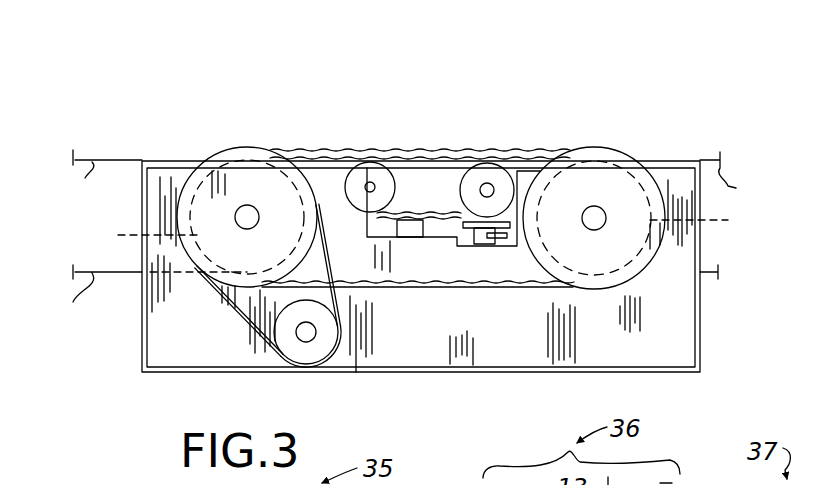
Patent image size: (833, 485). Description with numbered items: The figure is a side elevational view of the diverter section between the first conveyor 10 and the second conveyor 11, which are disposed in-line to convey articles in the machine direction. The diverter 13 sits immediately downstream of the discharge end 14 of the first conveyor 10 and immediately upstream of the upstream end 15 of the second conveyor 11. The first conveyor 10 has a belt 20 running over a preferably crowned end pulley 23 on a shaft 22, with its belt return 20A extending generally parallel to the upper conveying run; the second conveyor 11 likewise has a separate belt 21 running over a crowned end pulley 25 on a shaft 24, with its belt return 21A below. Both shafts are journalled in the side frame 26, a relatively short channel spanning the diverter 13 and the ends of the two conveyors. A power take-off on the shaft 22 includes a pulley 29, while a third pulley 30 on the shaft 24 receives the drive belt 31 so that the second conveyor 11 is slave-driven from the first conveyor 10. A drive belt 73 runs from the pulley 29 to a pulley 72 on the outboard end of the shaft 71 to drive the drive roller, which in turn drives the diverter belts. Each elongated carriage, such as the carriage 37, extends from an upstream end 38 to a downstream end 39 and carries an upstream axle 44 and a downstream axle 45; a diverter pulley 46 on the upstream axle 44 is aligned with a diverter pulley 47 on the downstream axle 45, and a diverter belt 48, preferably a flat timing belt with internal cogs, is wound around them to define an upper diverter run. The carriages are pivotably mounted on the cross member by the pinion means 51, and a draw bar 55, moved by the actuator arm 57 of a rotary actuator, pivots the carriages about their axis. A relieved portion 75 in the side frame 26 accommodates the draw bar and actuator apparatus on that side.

The first conveyor 10 is at (118, 112).
The second conveyor 11 is at (704, 140).
The diverter 13 is at (419, 342).
The discharge end 14 is at (285, 146).
The upstream end 15 is at (588, 143).
The belt 20 is at (105, 180).
The belt return 20A is at (152, 304).
The belt 21 is at (734, 179).
The belt return 21A is at (720, 272).
The shaft 22 is at (247, 217).
The end pulley 23 is at (143, 235).
The shaft 24 is at (594, 218).
The end pulley 25 is at (705, 222).
The side frame 26 is at (706, 338).
The pulley 29 is at (262, 263).
The third pulley 30 is at (608, 265).
The belt 31 is at (408, 287).
The carriage 37 is at (445, 150).
The upstream end 38 is at (352, 148).
The downstream end 39 is at (520, 150).
The upstream axle 44 is at (362, 172).
The downstream axle 45 is at (488, 189).
The diverter pulley 46 is at (394, 186).
The diverter pulley 47 is at (462, 188).
The diverter belt 48 is at (427, 162).
The pinion means 51 is at (412, 237).
The draw bar 55 is at (473, 237).
The actuator arm 57 is at (507, 241).
The shaft 71 is at (325, 359).
The pulley 72 is at (327, 340).
The drive belt 73 is at (240, 317).
The relieved portion 75 is at (486, 250).